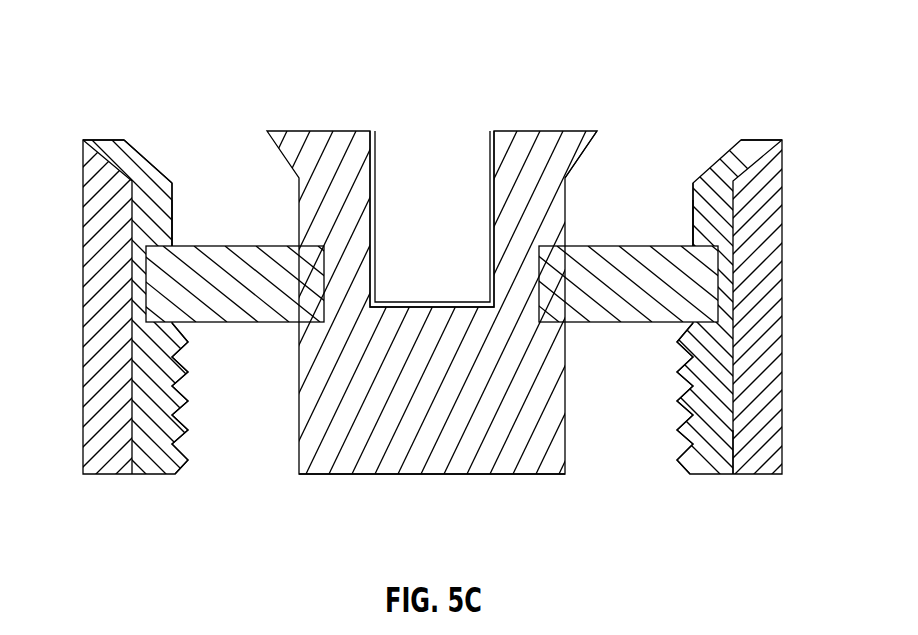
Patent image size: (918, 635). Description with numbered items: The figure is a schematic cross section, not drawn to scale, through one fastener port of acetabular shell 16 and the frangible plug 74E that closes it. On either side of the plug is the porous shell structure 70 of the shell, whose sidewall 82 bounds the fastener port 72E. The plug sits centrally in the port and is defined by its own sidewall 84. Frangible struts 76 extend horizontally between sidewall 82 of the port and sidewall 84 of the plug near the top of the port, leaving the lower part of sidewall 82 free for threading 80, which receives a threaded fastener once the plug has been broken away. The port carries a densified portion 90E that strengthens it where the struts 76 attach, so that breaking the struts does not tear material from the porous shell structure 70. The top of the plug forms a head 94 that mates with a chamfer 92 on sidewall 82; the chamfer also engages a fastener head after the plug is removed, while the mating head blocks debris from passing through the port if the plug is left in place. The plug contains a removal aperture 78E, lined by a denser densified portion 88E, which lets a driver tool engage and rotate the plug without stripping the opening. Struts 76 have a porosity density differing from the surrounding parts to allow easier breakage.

The acetabular shell 16 is at (781, 58).
The porous shell structure 70 is at (82, 243).
The fastener port 72E is at (180, 195).
The frangible plug 74E is at (391, 468).
The frangible struts 76 is at (243, 245).
The removal aperture 78E is at (428, 150).
The threading 80 is at (683, 467).
The sidewall 82 is at (172, 233).
The sidewall 84 is at (567, 200).
The densified portion 88E is at (385, 145).
The densified portion 90E is at (108, 146).
The chamfer 92 is at (138, 150).
The head 94 is at (575, 153).